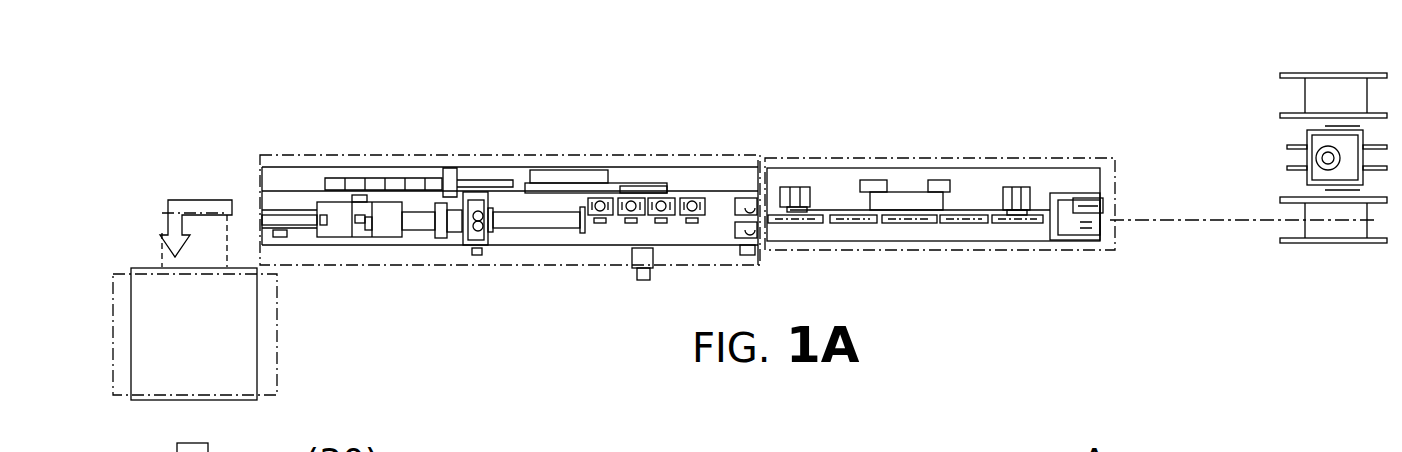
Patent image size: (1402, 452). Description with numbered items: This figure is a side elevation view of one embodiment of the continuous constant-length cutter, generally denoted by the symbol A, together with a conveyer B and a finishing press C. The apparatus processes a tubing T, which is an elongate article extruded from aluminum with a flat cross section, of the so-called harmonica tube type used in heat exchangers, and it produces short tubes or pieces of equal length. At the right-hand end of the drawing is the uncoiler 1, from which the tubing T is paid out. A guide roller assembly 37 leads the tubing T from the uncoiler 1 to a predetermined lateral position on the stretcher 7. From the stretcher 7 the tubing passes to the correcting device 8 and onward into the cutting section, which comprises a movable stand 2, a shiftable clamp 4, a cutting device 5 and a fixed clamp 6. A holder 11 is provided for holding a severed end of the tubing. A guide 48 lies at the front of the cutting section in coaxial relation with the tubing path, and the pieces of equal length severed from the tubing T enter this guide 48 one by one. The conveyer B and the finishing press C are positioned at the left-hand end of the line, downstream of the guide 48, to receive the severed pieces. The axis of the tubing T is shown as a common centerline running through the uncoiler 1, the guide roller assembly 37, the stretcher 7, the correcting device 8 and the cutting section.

The uncoiler 1 is at (1343, 237).
The movable stand 2 is at (385, 220).
The shiftable clamp 4 is at (370, 228).
The cutting device 5 is at (360, 225).
The fixed clamp 6 is at (447, 222).
The stretcher 7 is at (924, 173).
The correcting device 8 is at (696, 188).
The holder 11 is at (323, 227).
The guide roller assembly 37 is at (1090, 199).
The guide 48 is at (292, 220).
The continuous constant-length cutter A is at (1044, 113).
The conveyer B is at (162, 232).
The finishing press C is at (147, 373).
The tubing T is at (1190, 222).